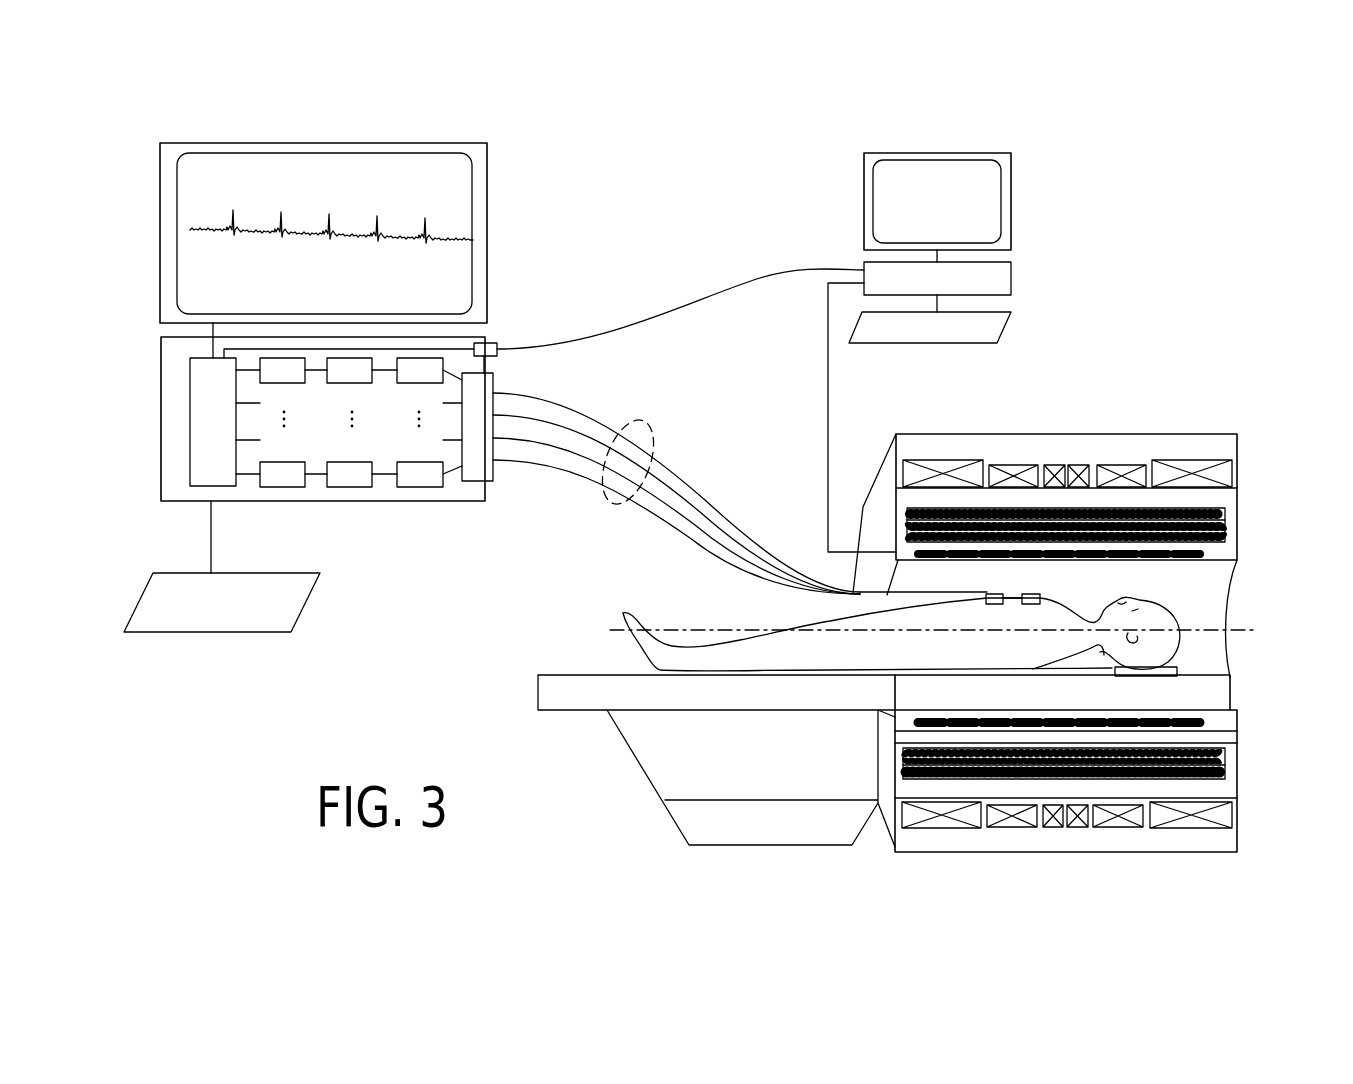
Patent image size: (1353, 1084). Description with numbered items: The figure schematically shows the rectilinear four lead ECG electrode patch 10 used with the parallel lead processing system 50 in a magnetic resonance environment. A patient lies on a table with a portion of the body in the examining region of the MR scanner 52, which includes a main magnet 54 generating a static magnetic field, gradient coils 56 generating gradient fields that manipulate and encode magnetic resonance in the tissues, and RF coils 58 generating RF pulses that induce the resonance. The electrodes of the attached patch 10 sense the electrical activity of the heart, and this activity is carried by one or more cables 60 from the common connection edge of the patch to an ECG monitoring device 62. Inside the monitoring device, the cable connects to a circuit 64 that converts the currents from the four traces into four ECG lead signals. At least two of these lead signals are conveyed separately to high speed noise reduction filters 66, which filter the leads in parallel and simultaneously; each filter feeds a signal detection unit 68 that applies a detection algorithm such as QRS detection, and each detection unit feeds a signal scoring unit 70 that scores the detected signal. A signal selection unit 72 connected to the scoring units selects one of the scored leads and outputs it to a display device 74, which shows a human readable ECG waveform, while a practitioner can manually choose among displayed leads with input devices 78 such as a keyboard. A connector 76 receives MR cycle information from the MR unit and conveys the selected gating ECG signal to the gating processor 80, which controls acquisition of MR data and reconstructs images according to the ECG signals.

The rectilinear 4 lead ECG electrode patch 10 is at (1003, 593).
The parallel lead processing system 50 is at (728, 421).
The magnetic resonance scanner 52 is at (1057, 434).
The main magnet 54 is at (1237, 476).
The gradient coils 56 is at (1225, 527).
The radio frequency coils 58 is at (1205, 552).
The cables 60 is at (662, 420).
The ECG monitoring device 62 is at (161, 388).
The circuit 64 is at (494, 481).
The high speed noise reduction filters 66 is at (428, 501).
The signal detection unit 68 is at (348, 501).
The signal scoring unit 70 is at (283, 501).
The signal selection unit 72 is at (193, 501).
The display device 74 is at (487, 188).
The connector 76 is at (490, 342).
The input devices 78 is at (306, 601).
The gating processor 80 is at (1014, 186).